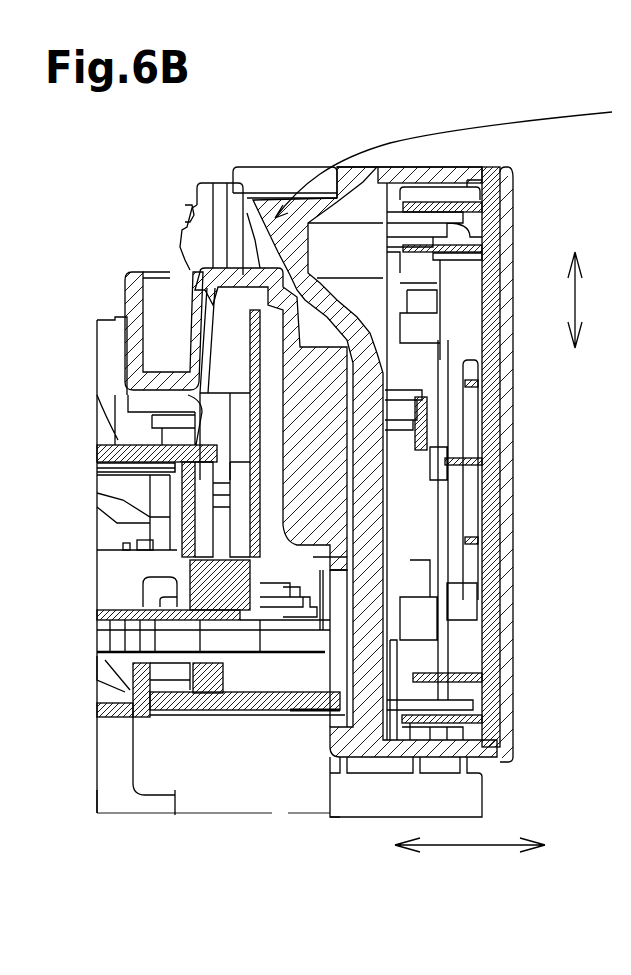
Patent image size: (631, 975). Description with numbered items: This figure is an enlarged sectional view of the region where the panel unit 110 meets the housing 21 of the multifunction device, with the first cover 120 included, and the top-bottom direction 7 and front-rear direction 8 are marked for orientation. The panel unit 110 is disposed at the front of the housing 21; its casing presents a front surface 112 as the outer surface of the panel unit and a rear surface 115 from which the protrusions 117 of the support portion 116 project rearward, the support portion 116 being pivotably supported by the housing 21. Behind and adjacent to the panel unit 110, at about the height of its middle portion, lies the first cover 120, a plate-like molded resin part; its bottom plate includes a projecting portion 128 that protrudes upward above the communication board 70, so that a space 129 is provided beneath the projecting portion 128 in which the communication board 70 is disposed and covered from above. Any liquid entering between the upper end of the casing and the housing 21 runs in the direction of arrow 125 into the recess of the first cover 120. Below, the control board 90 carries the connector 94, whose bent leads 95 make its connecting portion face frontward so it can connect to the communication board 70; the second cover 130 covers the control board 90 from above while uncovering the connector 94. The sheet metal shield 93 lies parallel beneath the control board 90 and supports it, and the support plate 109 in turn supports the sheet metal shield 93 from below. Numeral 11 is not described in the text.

The panel unit 110 is at (516, 160).
The front surface 112 is at (515, 437).
The arrow 125 is at (354, 133).
The projecting portion 128 is at (247, 200).
The support portion 116 is at (157, 185).
The protrusions 117 is at (230, 253).
The space 129 is at (232, 304).
The first cover 120 is at (283, 337).
The communication board 70 is at (255, 362).
The second cover 130 is at (100, 408).
The connector 94 is at (235, 583).
The leads 95 is at (150, 588).
The control board 90 is at (105, 638).
The sheet metal shield 93 is at (115, 660).
The support plate 109 is at (133, 766).
The frame 11 is at (118, 812).
The housing 21 is at (276, 778).
The rear surface 115 is at (350, 612).
The top-bottom direction 7 is at (576, 300).
The front-rear direction 8 is at (498, 846).